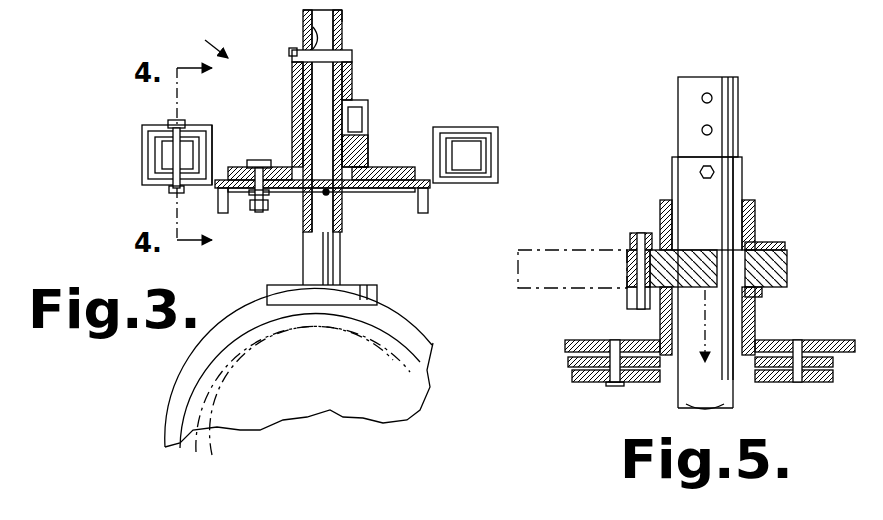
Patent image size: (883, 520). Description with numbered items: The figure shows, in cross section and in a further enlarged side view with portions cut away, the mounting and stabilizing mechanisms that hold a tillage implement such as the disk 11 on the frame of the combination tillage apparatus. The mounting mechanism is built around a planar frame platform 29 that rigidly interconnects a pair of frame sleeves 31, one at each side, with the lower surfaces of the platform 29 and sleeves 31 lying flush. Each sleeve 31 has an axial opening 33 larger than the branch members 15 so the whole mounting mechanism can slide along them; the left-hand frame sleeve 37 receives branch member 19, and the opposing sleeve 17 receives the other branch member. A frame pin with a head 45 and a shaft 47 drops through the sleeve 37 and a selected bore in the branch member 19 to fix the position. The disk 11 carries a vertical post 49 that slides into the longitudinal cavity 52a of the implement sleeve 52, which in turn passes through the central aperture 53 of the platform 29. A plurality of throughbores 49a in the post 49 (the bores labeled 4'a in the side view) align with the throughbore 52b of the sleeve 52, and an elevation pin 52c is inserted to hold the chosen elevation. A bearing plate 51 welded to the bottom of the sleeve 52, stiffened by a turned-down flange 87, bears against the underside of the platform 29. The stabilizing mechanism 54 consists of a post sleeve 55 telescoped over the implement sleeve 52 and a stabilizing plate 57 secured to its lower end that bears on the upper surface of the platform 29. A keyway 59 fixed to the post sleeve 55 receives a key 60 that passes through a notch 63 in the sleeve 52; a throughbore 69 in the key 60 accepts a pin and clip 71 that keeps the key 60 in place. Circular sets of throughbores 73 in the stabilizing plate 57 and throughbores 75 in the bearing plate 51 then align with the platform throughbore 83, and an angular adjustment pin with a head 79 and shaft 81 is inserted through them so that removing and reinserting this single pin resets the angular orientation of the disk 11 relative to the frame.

In FIG. 3, the disk 11 is at (396, 328).
In FIG. 3, the branch members 15 is at (196, 135).
In FIG. 3, the right outer bracket 17 is at (433, 138).
In FIG. 3, the branch member 19 is at (180, 188).
In FIG. 3, the frame platform 29 is at (428, 186).
In FIG. 5, the frame platform 29 is at (568, 358).
In FIG. 3, the frame sleeves 31 is at (142, 160).
In FIG. 3, the axial opening 33 is at (160, 176).
In FIG. 3, the frame sleeve 37 is at (142, 128).
In FIG. 3, the head 45 is at (172, 124).
In FIG. 3, the shaft 47 is at (212, 138).
In FIG. 3, the post 49 is at (342, 38).
In FIG. 5, the post 49 is at (738, 80).
In FIG. 3, the throughbores 49a is at (343, 22).
In FIG. 3, the bearing plate 51 is at (404, 192).
In FIG. 5, the bearing plate 51 is at (574, 378).
In FIG. 3, the implement sleeve 52 is at (352, 76).
In FIG. 5, the implement sleeve 52 is at (746, 160).
In FIG. 3, the longitudinal cavity 52a is at (300, 28).
In FIG. 3, the throughbore 52b is at (292, 58).
In FIG. 5, the elevation pin 52c is at (700, 172).
In FIG. 3, the aperture 53 is at (336, 204).
In FIG. 3, the stabilizing mechanism 54 is at (202, 38).
In FIG. 3, the post sleeve 55 is at (292, 105).
In FIG. 5, the post sleeve 55 is at (755, 312).
In FIG. 3, the stabilizing plate 57 is at (396, 167).
In FIG. 5, the stabilizing plate 57 is at (565, 344).
In FIG. 3, the keyway 59 is at (366, 112).
In FIG. 5, the keyway 59 is at (772, 242).
In FIG. 5, the key 60 is at (780, 272).
In FIG. 3, the notch 63 is at (348, 122).
In FIG. 5, the throughbore 69 is at (620, 268).
In FIG. 5, the pin and clip 71 is at (636, 232).
In FIG. 5, the throughbores 73 is at (616, 342).
In FIG. 5, the throughbores 75 is at (622, 382).
In FIG. 3, the head 79 is at (256, 162).
In FIG. 3, the shaft 81 is at (266, 212).
In FIG. 3, the platform throughbore 83 is at (257, 196).
In FIG. 3, the flange 87 is at (428, 213).
In FIG. 5, the holes 4'a is at (674, 114).